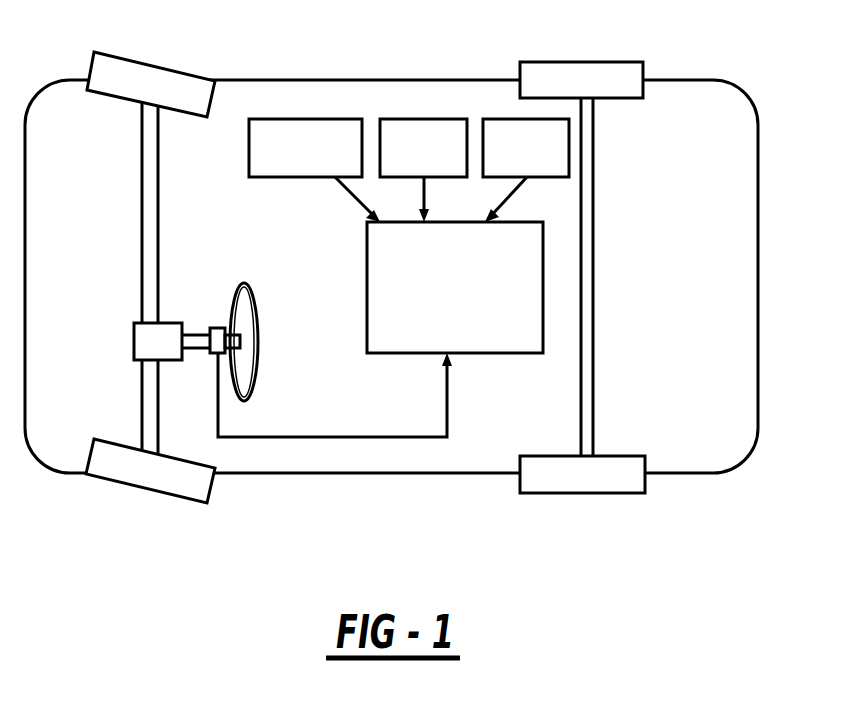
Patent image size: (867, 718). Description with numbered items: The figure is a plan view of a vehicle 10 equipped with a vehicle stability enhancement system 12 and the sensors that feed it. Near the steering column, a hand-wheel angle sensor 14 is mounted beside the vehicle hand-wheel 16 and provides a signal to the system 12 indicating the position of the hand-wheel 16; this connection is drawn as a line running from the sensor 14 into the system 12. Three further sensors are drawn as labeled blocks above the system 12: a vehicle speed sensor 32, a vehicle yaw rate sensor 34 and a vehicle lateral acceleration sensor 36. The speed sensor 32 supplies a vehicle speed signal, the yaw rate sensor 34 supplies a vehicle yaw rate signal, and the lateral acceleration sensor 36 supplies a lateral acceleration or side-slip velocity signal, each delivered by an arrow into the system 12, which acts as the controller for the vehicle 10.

The vehicle 10 is at (760, 227).
The vehicle stability enhancement system 12 is at (543, 285).
The hand-wheel angle sensor 14 is at (222, 333).
The vehicle hand-wheel 16 is at (258, 380).
The vehicle speed sensor 32 is at (312, 118).
The vehicle yaw rate sensor 34 is at (437, 117).
The vehicle lateral acceleration sensor 36 is at (569, 147).